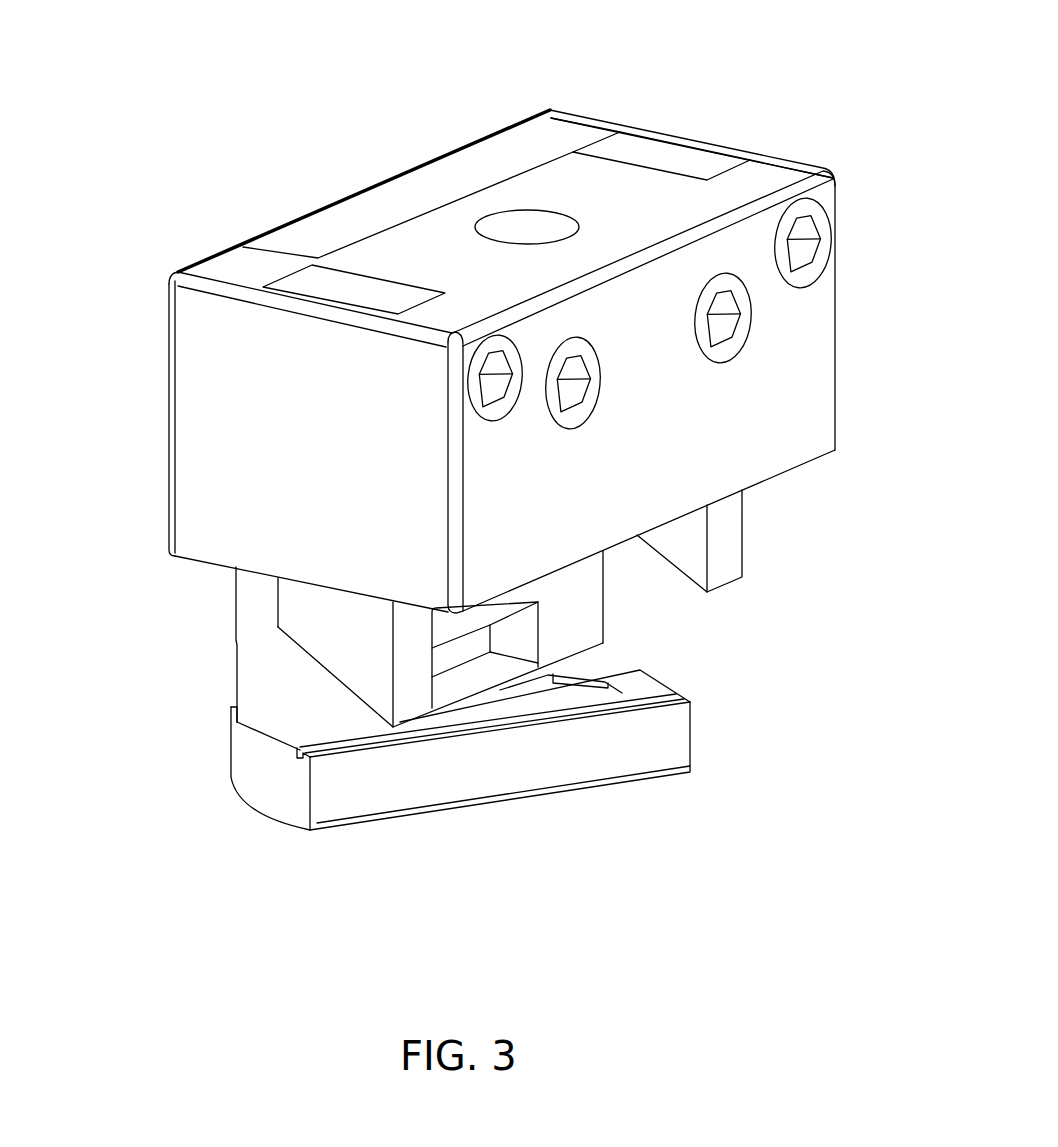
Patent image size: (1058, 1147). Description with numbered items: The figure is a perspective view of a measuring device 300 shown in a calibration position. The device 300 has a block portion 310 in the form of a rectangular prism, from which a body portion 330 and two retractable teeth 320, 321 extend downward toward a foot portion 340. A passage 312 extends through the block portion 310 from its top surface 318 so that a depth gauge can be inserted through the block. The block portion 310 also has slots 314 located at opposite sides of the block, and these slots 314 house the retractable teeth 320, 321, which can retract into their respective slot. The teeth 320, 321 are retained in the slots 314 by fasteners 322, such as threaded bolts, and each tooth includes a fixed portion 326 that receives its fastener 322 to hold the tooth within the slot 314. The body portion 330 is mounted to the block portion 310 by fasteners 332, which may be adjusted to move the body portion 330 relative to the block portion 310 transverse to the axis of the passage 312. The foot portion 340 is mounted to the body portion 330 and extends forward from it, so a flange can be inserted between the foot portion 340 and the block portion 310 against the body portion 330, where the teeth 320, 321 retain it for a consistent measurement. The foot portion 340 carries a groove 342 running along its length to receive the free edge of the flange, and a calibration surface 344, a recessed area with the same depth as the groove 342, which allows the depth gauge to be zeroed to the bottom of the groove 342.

The measuring device 300 is at (160, 88).
The block portion 310 is at (578, 100).
The passage 312 is at (517, 228).
The slots 314 is at (288, 273).
The top surface 318 is at (780, 170).
The retractable tooth 320 is at (333, 647).
The retractable tooth 321 is at (740, 555).
The fasteners 322 is at (482, 388).
The fixed portion 326 is at (385, 685).
The body portion 330 is at (245, 635).
The fasteners 332 is at (560, 417).
The foot portion 340 is at (503, 803).
The groove 342 is at (297, 752).
The calibration surface 344 is at (587, 692).